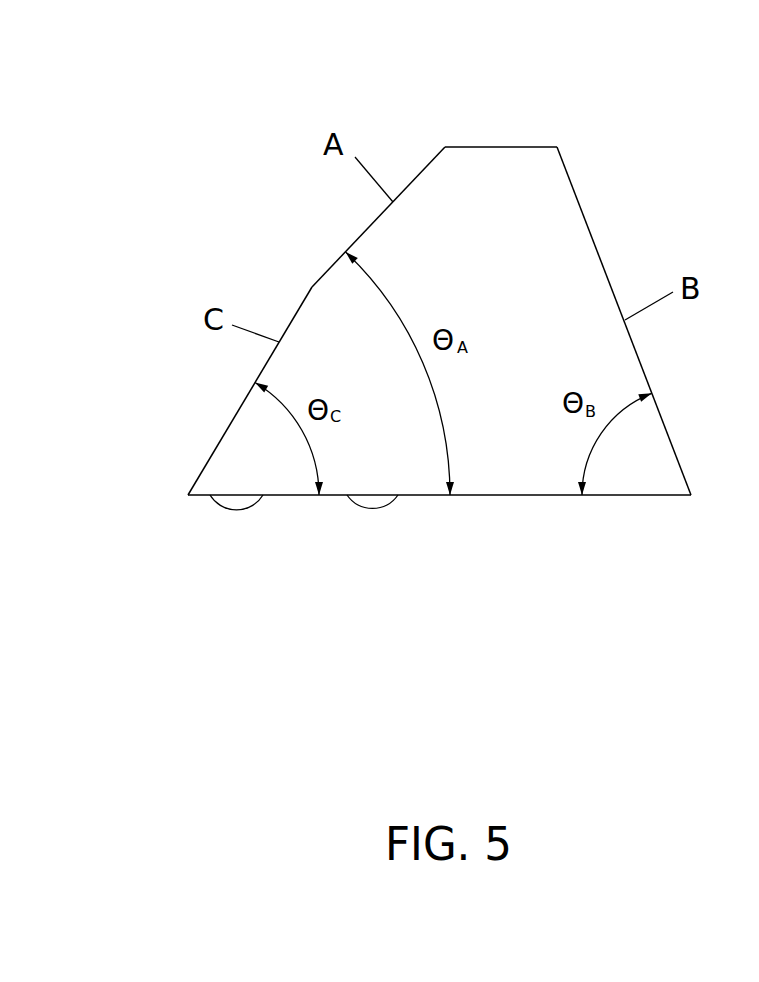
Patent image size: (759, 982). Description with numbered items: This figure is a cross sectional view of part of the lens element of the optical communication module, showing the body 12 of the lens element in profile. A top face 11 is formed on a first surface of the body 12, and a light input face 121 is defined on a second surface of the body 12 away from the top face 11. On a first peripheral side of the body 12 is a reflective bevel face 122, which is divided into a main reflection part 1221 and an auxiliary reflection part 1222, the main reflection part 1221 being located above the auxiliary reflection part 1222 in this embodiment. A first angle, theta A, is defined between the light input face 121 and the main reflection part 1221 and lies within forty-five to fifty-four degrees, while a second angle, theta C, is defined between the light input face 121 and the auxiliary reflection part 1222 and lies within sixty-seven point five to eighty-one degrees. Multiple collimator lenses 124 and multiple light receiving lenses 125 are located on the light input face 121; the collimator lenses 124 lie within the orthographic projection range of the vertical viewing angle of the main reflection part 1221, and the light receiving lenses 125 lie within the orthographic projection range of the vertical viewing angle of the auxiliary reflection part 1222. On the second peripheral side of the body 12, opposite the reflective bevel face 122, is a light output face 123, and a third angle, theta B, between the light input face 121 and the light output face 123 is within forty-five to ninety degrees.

The body 12 is at (392, 138).
The top face 11 is at (498, 147).
The light input face 121 is at (543, 497).
The reflective bevel face 122 is at (302, 300).
The main reflection part 1221 is at (358, 238).
The auxiliary reflection part 1222 is at (246, 397).
The light output face 123 is at (609, 283).
The collimator lenses 124 is at (387, 507).
The light receiving lenses 125 is at (250, 507).